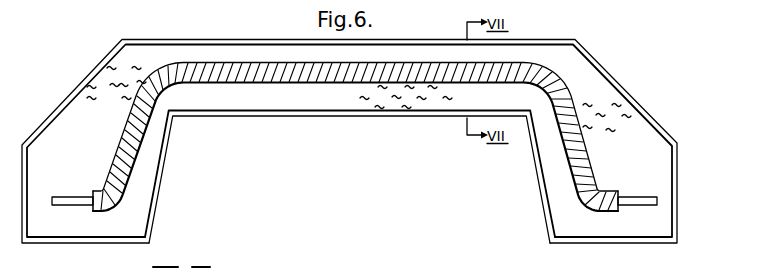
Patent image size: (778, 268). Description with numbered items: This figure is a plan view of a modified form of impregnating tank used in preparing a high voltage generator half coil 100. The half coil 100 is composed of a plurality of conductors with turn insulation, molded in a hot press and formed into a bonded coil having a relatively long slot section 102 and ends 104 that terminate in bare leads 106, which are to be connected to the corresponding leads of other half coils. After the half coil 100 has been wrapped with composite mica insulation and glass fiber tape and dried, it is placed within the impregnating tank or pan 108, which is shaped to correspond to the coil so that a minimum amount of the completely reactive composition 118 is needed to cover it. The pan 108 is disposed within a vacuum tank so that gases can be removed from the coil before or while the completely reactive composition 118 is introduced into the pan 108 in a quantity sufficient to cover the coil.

The half coil 100 is at (262, 62).
The slot section 102 is at (263, 82).
The ends 104 is at (122, 157).
The bare leads 106 is at (66, 207).
The impregnating tank 108 is at (263, 118).
The completely reactive composition 118 is at (390, 96).